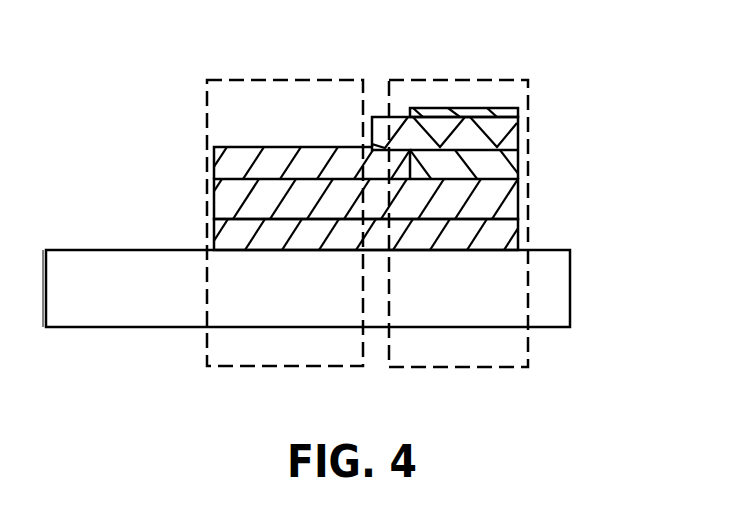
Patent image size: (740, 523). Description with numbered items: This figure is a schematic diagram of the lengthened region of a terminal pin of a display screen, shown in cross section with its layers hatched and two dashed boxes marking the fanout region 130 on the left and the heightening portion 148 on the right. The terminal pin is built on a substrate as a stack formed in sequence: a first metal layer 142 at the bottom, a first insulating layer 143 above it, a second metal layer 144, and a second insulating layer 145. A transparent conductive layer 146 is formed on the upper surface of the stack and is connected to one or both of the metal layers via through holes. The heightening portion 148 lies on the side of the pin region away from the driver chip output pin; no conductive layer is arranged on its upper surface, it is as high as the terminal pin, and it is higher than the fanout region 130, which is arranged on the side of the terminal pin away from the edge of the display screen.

The fanout region 130 is at (280, 80).
The heightening portion 148 is at (477, 80).
The first metal layer 142 is at (520, 237).
The first insulating layer 143 is at (257, 200).
The second metal layer 144 is at (492, 163).
The second insulating layer 145 is at (257, 153).
The transparent conductive layer 146 is at (524, 107).